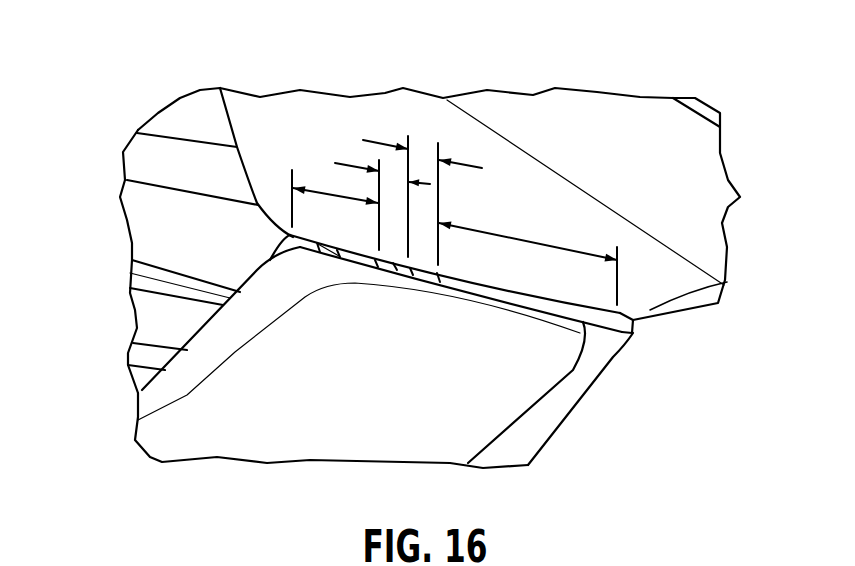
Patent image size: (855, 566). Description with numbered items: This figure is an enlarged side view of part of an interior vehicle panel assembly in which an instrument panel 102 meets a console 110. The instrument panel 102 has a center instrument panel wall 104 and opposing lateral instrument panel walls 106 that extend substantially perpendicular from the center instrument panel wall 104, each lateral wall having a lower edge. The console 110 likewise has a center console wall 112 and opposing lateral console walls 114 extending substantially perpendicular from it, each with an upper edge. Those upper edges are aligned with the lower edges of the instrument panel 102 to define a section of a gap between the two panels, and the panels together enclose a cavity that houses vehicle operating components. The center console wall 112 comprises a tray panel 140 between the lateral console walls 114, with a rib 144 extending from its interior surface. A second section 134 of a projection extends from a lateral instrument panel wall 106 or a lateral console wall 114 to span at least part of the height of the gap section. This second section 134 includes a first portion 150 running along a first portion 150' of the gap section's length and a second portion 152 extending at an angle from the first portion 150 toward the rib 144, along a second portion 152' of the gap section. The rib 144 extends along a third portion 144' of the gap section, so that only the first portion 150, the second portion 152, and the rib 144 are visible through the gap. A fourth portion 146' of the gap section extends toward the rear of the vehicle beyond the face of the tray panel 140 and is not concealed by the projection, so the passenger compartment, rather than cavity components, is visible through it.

The instrument panel 102 is at (648, 140).
The center instrument panel wall 104 is at (187, 123).
The lateral instrument panel wall 106 is at (683, 187).
The console 110 is at (210, 440).
The center console wall 112 is at (170, 318).
The lateral console wall 114 is at (473, 425).
The second section of the projection 134 is at (645, 323).
The tray panel 140 is at (163, 222).
The rib 144 is at (355, 308).
The third portion of the gap section 144' is at (371, 146).
The fourth portion of the gap section 146' is at (318, 137).
The first portion of the projection section 150 is at (456, 313).
The first portion of the gap section 150' is at (527, 213).
The second portion of the projection section 152 is at (405, 316).
The second portion of the gap section 152' is at (466, 145).